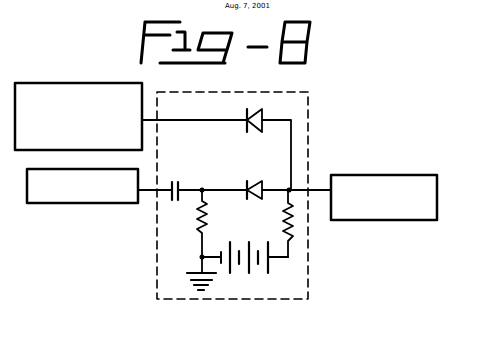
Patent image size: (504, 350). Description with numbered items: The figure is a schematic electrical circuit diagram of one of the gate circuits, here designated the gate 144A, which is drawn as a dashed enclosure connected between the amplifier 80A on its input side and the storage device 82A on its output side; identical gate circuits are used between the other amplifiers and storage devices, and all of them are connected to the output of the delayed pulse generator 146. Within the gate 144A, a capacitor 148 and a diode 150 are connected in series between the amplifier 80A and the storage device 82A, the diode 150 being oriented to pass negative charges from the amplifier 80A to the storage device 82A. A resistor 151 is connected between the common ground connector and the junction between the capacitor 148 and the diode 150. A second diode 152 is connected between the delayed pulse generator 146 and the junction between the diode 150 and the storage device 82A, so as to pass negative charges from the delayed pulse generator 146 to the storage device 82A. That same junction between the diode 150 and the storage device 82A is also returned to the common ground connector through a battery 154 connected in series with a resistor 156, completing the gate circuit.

The delayed pulse generator 146 is at (33, 91).
The amplifier 80A is at (83, 203).
The storage device 82A is at (410, 176).
The gate 144A is at (233, 301).
The capacitor 148 is at (175, 180).
The diode 150 is at (265, 180).
The second diode 152 is at (263, 111).
The resistor 151 is at (197, 210).
The battery 154 is at (254, 248).
The resistor 156 is at (294, 228).